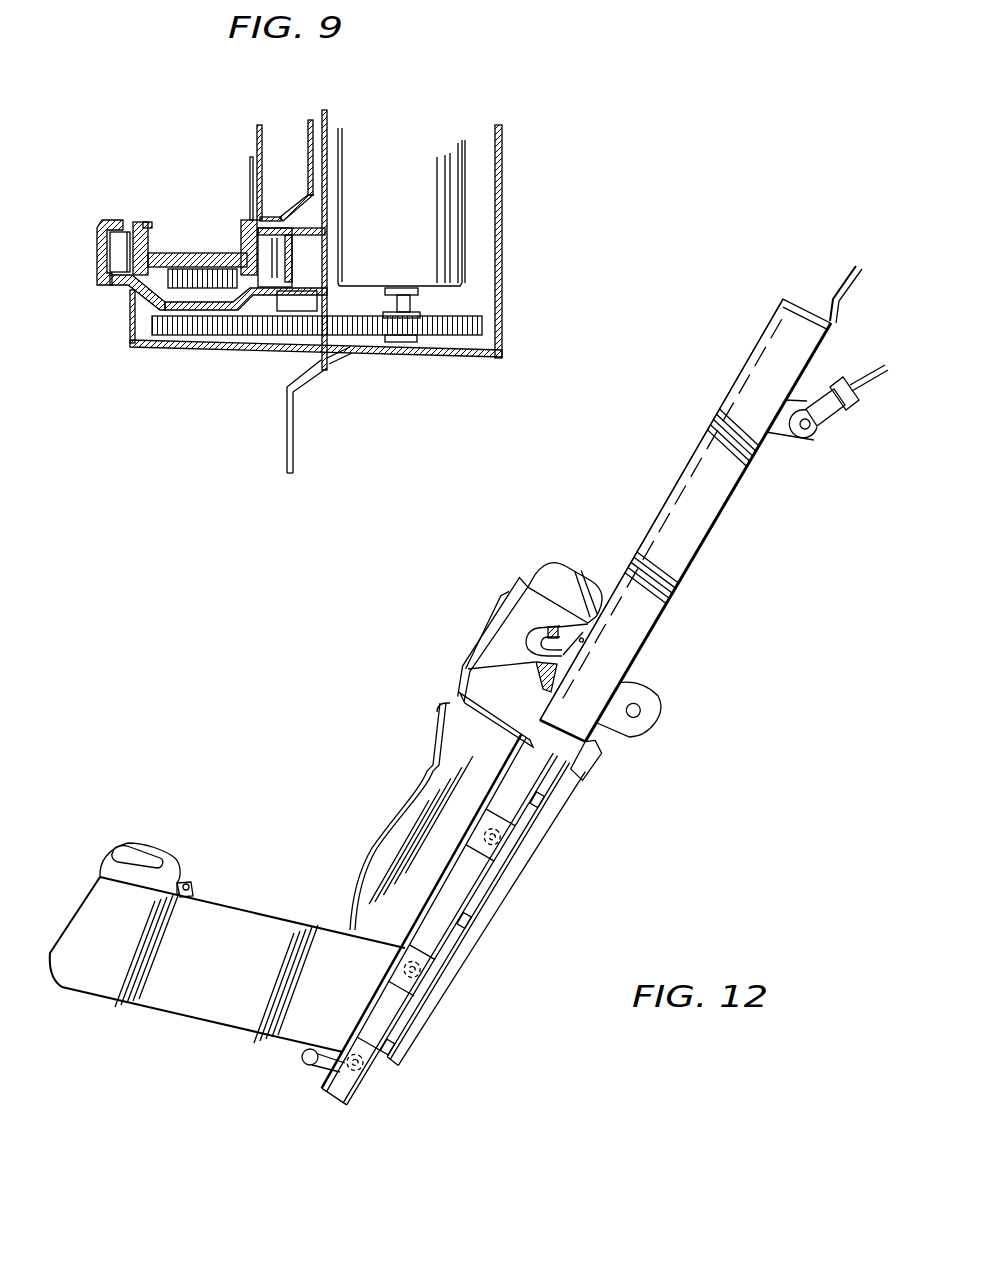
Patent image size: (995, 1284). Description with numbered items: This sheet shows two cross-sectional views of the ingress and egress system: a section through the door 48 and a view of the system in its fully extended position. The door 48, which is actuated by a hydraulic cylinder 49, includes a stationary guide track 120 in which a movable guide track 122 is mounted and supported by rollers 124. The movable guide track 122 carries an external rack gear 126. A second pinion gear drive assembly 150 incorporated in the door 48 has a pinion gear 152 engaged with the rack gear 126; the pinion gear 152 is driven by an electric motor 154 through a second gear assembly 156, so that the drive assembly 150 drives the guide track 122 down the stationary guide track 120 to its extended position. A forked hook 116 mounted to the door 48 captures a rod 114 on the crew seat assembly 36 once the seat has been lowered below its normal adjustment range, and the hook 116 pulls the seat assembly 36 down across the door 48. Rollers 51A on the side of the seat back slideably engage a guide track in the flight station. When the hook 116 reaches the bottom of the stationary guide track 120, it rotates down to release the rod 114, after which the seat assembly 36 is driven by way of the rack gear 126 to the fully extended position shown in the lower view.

In FIG. 12, the crew seat assembly 36 is at (165, 1003).
In FIG. 9, the door 48 is at (503, 168).
In FIG. 12, the door 48 is at (705, 566).
In FIG. 12, the hydraulic cylinder 49 is at (856, 420).
In FIG. 12, the rollers 51A is at (522, 843).
In FIG. 12, the rod 114 is at (307, 1063).
In FIG. 12, the forked hook 116 is at (530, 638).
In FIG. 9, the stationary guide track 120 is at (93, 279).
In FIG. 12, the stationary guide track 120 is at (657, 523).
In FIG. 9, the guide track 122 is at (128, 258).
In FIG. 12, the guide track 122 is at (403, 1028).
In FIG. 9, the rollers 124 is at (105, 284).
In FIG. 9, the external rack gear 126 is at (228, 287).
In FIG. 9, the second pinion gear drive assembly 150 is at (262, 365).
In FIG. 12, the second pinion gear drive assembly 150 is at (658, 707).
In FIG. 9, the pinion gear 152 is at (187, 284).
In FIG. 9, the electric motor 154 is at (452, 217).
In FIG. 9, the second gear assembly 156 is at (472, 327).